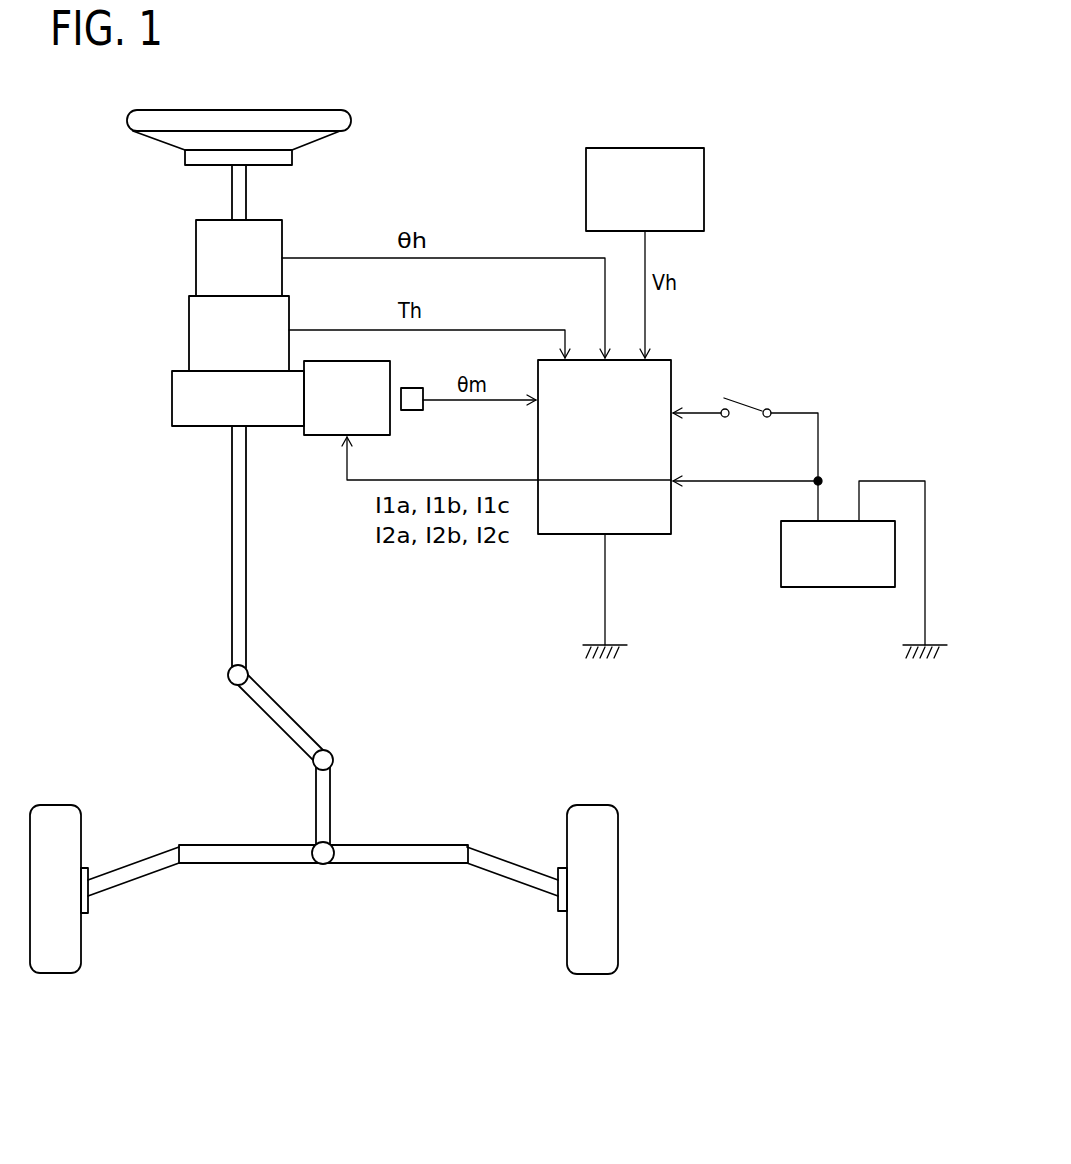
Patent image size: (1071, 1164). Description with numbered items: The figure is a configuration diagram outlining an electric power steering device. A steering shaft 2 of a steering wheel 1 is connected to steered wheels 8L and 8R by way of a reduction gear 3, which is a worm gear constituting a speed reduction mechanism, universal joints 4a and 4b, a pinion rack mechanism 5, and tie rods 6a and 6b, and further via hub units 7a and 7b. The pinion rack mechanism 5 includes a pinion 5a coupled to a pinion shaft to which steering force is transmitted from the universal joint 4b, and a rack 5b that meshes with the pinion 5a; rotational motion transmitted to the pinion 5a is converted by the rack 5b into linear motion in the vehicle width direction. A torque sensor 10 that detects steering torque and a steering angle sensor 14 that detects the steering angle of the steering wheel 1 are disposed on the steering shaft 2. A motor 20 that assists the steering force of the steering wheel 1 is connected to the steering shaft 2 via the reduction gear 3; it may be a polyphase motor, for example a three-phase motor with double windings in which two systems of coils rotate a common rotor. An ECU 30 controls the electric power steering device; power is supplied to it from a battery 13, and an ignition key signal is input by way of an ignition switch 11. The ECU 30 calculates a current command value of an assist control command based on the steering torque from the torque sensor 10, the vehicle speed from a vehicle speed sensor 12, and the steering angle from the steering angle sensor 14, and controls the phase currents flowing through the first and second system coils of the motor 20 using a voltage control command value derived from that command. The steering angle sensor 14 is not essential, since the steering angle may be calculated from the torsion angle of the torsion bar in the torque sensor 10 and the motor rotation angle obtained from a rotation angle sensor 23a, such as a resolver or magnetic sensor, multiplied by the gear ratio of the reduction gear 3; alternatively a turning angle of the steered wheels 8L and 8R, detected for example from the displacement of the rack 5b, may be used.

The steering wheel 1 is at (322, 110).
The steering shaft 2 is at (232, 194).
The reduction gear 3 is at (172, 392).
The universal joint 4a is at (228, 677).
The universal joint 4b is at (313, 763).
The pinion rack mechanism 5 is at (323, 911).
The pinion 5a is at (323, 864).
The rack 5b is at (278, 865).
The tie rod 6a is at (142, 859).
The tie rod 6b is at (505, 859).
The hub unit 7a is at (92, 905).
The hub unit 7b is at (557, 903).
The steered wheel 8L is at (80, 968).
The steered wheel 8R is at (570, 970).
The torque sensor 10 is at (189, 332).
The ignition switch 11 is at (768, 407).
The vehicle speed sensor 12 is at (655, 147).
The battery 13 is at (820, 590).
The steering angle sensor 14 is at (196, 265).
The motor 20 is at (318, 440).
The rotation angle sensor 23a is at (412, 410).
The ECU 30 is at (666, 360).